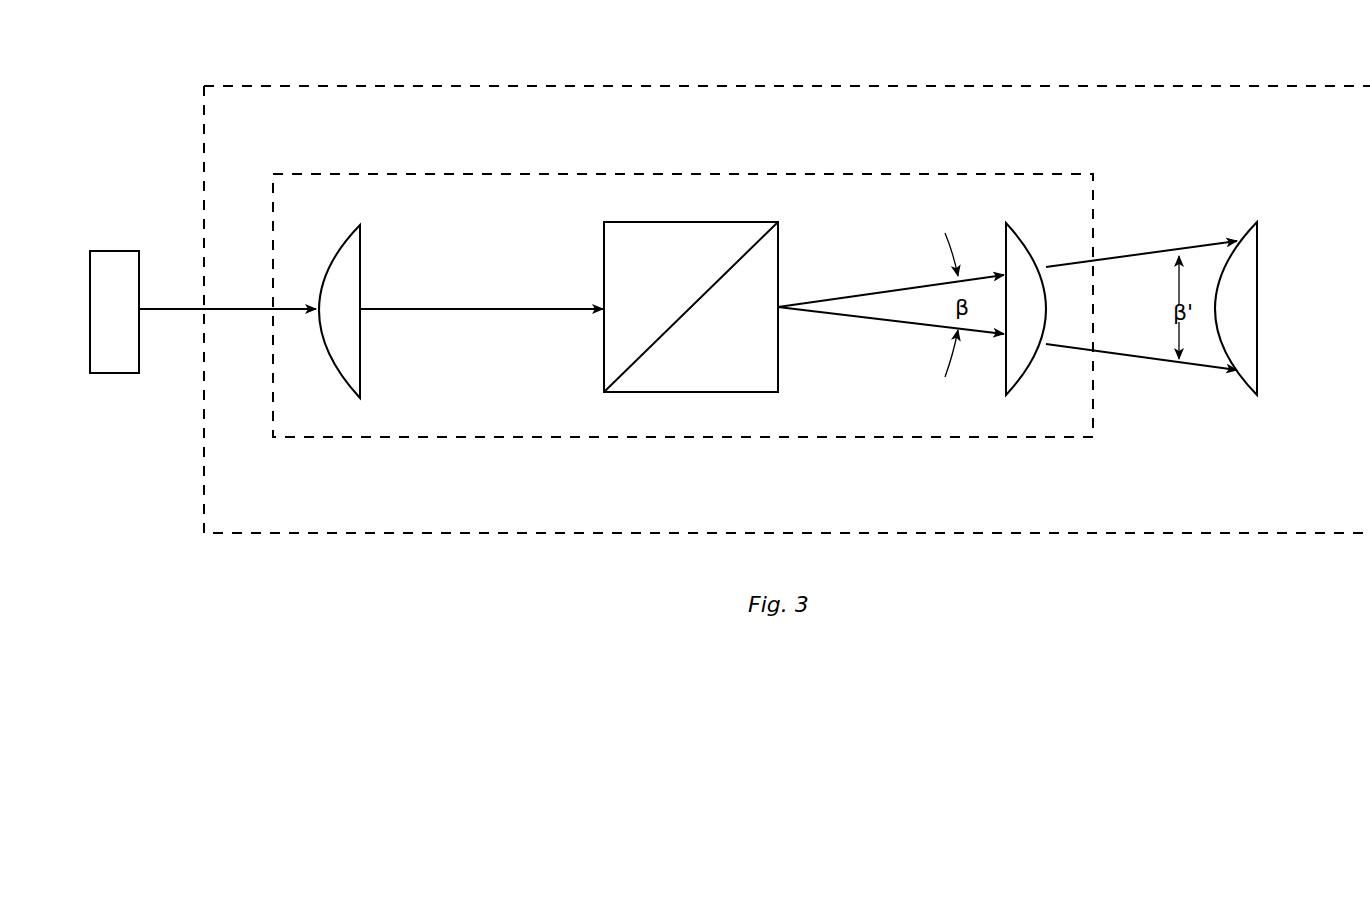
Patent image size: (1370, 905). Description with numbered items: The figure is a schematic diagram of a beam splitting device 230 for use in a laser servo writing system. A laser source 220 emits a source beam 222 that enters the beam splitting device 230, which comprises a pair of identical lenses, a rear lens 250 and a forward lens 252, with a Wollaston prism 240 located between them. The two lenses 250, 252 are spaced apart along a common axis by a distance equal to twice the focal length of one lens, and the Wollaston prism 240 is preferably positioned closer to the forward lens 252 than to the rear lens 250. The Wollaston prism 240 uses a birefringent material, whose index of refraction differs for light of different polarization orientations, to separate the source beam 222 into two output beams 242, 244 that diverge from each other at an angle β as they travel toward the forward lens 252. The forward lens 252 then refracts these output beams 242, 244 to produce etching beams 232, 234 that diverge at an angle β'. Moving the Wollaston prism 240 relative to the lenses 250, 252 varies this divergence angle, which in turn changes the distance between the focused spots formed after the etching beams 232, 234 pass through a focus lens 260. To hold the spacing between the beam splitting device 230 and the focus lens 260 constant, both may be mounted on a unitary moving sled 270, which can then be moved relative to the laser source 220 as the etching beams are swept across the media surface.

The laser source 220 is at (118, 251).
The source beam 222 is at (226, 306).
The beam splitting device 230 is at (673, 174).
The etching beam 232 is at (1112, 254).
The etching beam 234 is at (1112, 352).
The Wollaston prism 240 is at (782, 242).
The output beam 242 is at (897, 286).
The output beam 244 is at (897, 326).
The rear lens 250 is at (363, 244).
The forward lens 252 is at (1024, 236).
The focus lens 260 is at (1260, 243).
The moving sled 270 is at (814, 86).